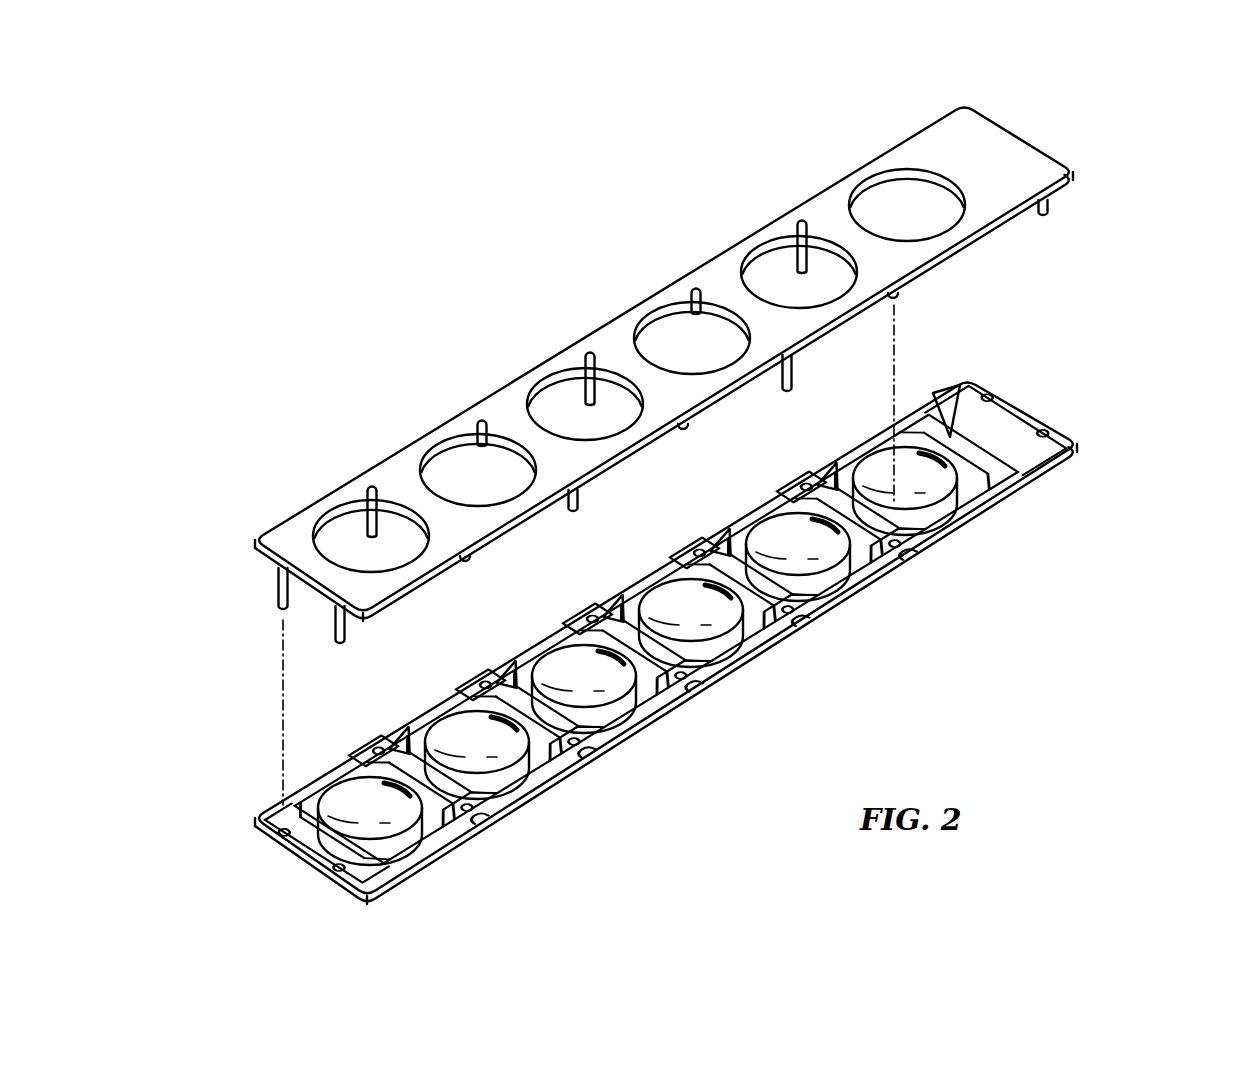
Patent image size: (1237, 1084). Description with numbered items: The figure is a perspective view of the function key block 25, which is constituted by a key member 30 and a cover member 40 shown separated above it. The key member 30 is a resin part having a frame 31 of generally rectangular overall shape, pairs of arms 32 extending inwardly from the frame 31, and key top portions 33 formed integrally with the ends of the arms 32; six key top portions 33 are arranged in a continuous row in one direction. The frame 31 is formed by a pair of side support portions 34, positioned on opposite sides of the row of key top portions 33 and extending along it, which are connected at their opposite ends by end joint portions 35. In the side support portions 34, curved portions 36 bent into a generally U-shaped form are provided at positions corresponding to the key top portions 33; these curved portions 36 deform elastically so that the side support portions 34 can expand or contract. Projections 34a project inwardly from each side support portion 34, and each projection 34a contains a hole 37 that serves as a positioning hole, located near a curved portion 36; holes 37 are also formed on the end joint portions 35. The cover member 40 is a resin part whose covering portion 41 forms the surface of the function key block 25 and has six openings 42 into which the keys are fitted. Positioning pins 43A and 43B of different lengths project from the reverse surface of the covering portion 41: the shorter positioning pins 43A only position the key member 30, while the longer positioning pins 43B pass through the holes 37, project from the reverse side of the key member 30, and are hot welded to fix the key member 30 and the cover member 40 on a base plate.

The function key block 25 is at (1150, 237).
The key member 30 is at (1052, 408).
The frame 31 is at (1017, 490).
The arms 32 is at (947, 400).
The key top portions 33 is at (946, 500).
The side support portions 34 is at (820, 612).
The projections 34a is at (500, 795).
The end joint portions 35 is at (1016, 405).
The curved portions 36 is at (880, 565).
The hole 37 is at (990, 396).
The cover member 40 is at (1062, 180).
The covering portion 41 is at (987, 142).
The openings 42 is at (882, 178).
The positioning pins 43A is at (690, 290).
The positioning pins 43B is at (795, 238).